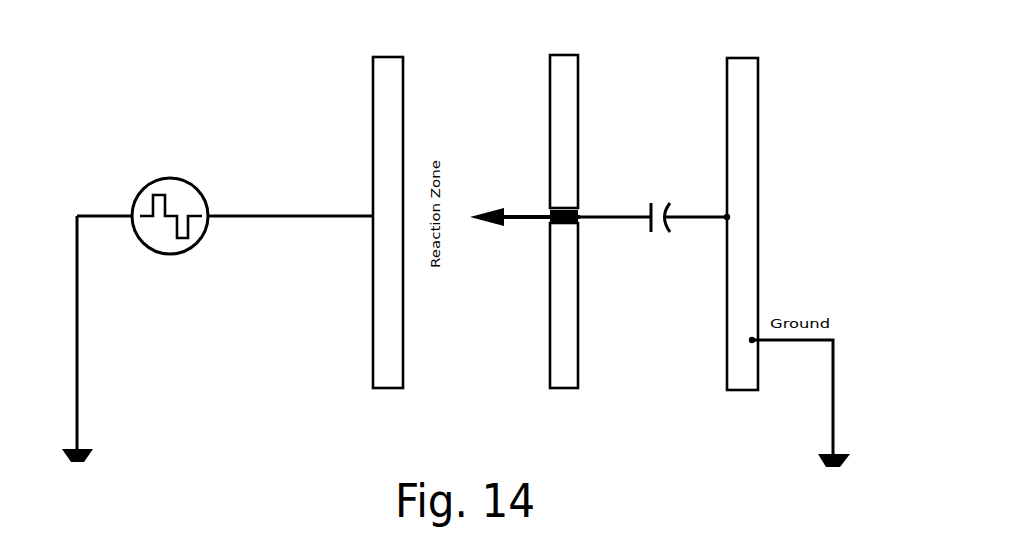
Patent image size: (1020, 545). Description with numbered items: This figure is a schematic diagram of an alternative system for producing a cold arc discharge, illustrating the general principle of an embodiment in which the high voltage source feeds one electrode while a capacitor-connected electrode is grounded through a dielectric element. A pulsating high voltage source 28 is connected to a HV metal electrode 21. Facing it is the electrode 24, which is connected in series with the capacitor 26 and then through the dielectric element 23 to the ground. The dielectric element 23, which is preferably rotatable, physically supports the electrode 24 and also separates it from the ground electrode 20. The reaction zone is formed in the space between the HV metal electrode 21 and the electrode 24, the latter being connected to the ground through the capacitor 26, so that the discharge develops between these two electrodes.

The pulsating high voltage source 28 is at (137, 201).
The HV metal electrode 21 is at (388, 363).
The electrode 24 is at (522, 222).
The dielectric element 23 is at (567, 352).
The capacitor 26 is at (647, 235).
The ground electrode 20 is at (740, 133).